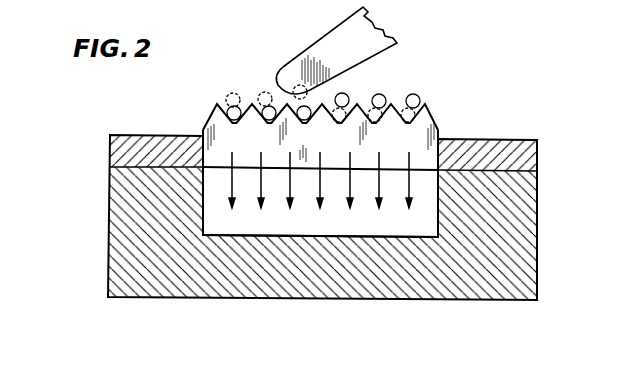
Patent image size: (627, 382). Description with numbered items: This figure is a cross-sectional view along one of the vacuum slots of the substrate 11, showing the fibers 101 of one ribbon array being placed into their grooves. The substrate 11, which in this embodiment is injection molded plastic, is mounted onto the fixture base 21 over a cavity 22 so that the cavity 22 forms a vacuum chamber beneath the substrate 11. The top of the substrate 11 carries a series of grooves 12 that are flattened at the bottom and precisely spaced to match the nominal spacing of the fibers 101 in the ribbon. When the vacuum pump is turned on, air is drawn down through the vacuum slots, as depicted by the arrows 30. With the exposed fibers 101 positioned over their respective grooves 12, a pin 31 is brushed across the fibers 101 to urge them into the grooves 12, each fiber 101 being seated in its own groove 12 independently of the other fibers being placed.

The substrate 11 is at (117, 153).
The grooves 12 is at (433, 119).
The fixture base 21 is at (513, 258).
The cavity 22 is at (344, 237).
The arrows 30 is at (253, 185).
The pin 31 is at (312, 48).
The fibers 101 is at (235, 108).